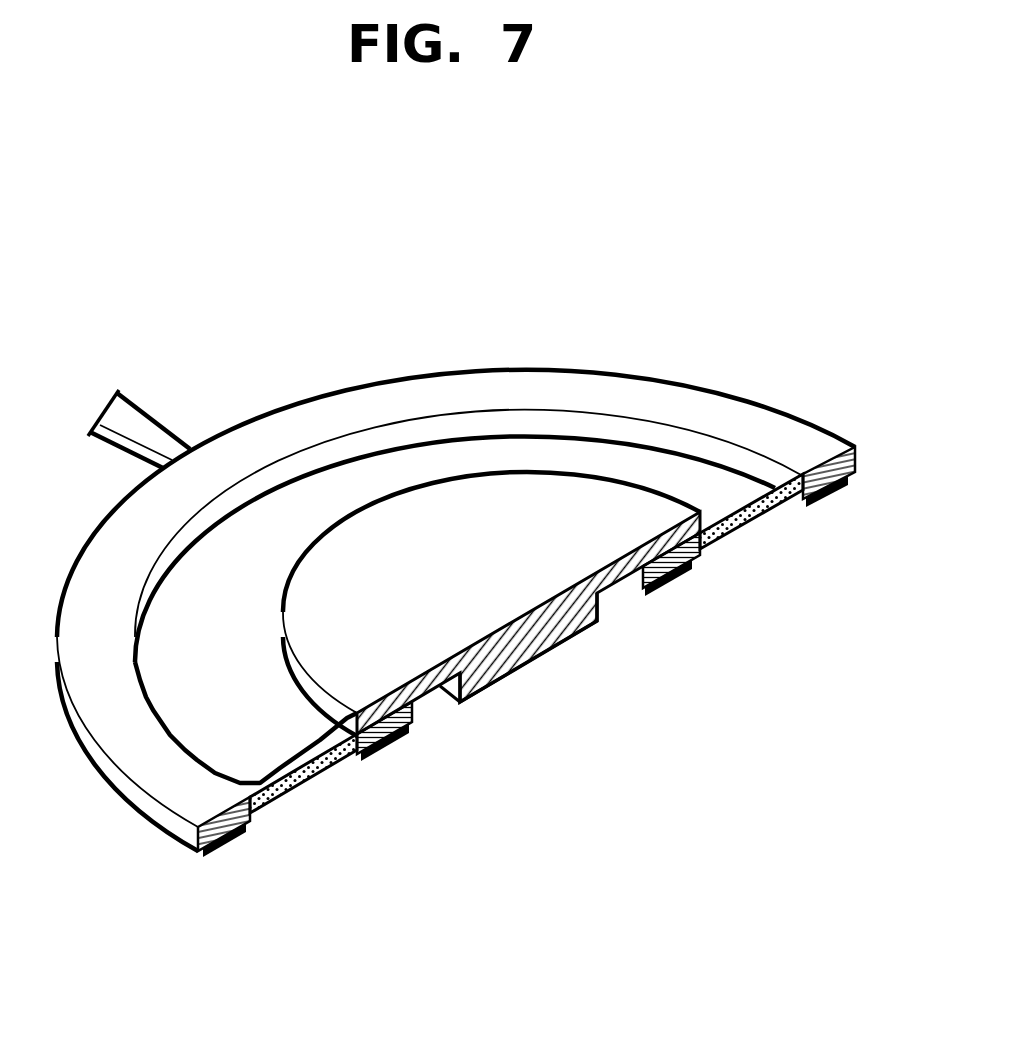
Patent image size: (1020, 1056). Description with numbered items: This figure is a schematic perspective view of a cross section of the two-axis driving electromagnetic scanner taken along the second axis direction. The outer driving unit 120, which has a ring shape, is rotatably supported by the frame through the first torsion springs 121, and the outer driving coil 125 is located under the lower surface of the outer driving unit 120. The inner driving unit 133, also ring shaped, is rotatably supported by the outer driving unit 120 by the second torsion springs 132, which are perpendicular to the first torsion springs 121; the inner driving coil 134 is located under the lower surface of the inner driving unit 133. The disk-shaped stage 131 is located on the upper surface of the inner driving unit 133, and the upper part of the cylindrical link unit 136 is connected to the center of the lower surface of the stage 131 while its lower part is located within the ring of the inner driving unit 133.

The outer driving unit 120 is at (735, 413).
The first torsion springs 121 is at (148, 436).
The outer driving coil 125 is at (823, 500).
The stage 131 is at (505, 490).
The second torsion springs 132 is at (747, 543).
The inner driving unit 133 is at (387, 753).
The inner driving coil 134 is at (667, 590).
The link unit 136 is at (517, 667).